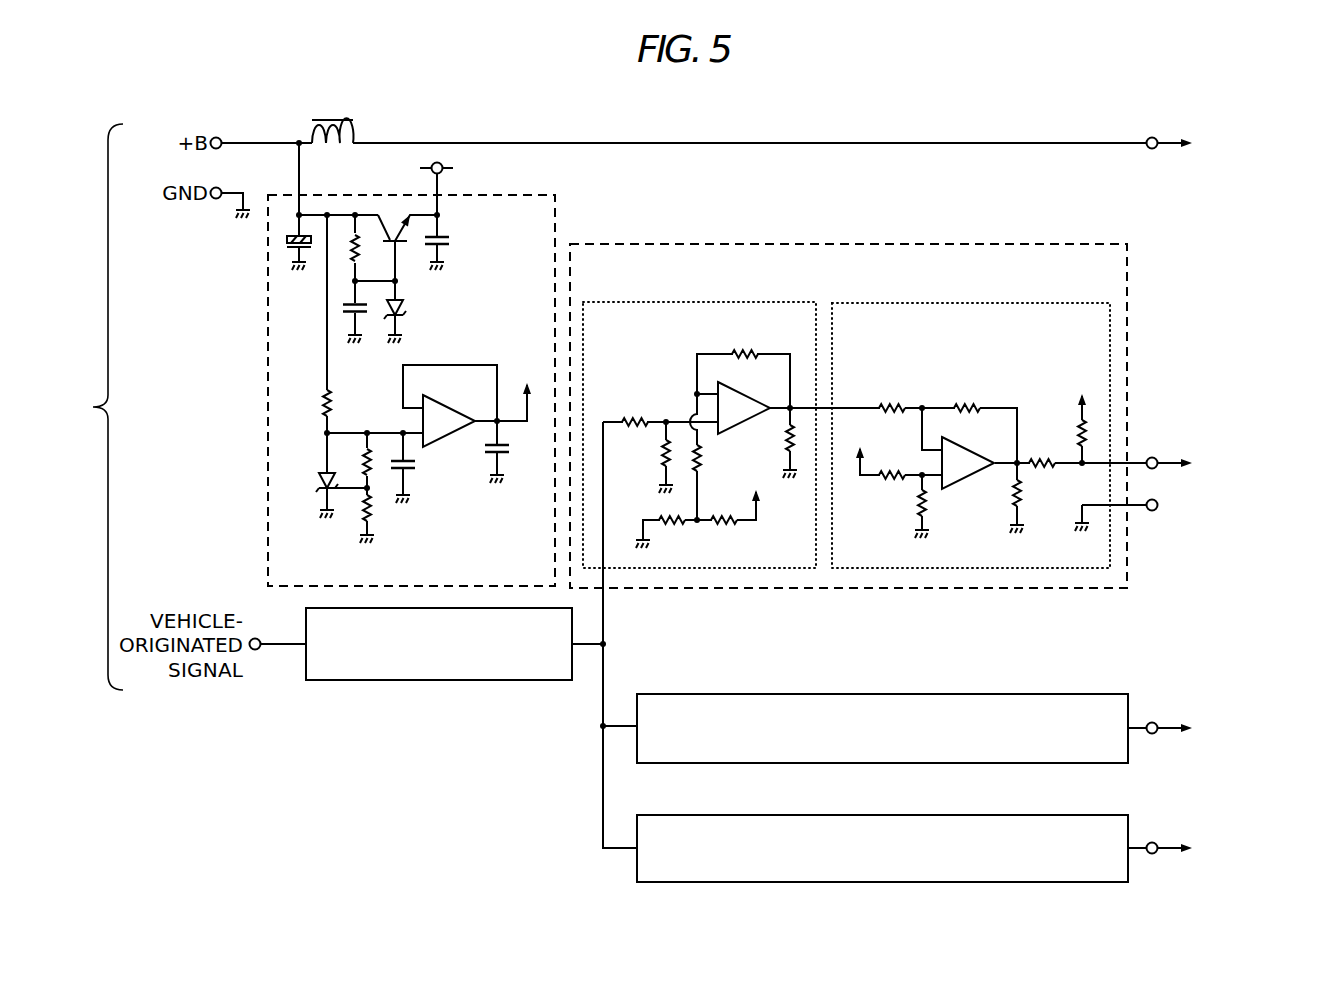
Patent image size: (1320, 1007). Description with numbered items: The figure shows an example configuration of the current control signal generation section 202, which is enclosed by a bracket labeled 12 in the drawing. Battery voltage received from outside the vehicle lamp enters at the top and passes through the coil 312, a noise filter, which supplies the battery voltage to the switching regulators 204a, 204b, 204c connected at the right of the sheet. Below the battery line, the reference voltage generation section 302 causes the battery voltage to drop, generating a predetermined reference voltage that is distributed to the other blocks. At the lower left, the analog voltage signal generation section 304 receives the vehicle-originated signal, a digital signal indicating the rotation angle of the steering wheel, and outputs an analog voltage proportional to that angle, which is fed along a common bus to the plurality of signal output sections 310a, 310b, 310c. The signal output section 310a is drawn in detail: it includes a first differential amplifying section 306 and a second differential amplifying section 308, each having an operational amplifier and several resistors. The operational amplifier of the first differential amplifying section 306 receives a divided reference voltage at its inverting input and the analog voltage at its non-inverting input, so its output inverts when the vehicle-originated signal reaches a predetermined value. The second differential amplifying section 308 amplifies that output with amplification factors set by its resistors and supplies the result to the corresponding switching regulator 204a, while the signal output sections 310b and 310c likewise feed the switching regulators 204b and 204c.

The vehicle sensor unit 12 is at (94, 407).
The current control signal generation section 202 is at (1090, 110).
The switching regulator 204a is at (1202, 463).
The switching regulator 204b is at (1202, 728).
The switching regulator 204c is at (1202, 848).
The reference voltage generation section 302 is at (266, 398).
The analog voltage signal generation section 304 is at (436, 680).
The first differential amplifying section 306 is at (697, 302).
The second differential amplifying section 308 is at (967, 303).
The signal output section 310a is at (866, 244).
The signal output section 310b is at (880, 694).
The signal output section 310c is at (880, 815).
The coil 312 is at (335, 118).